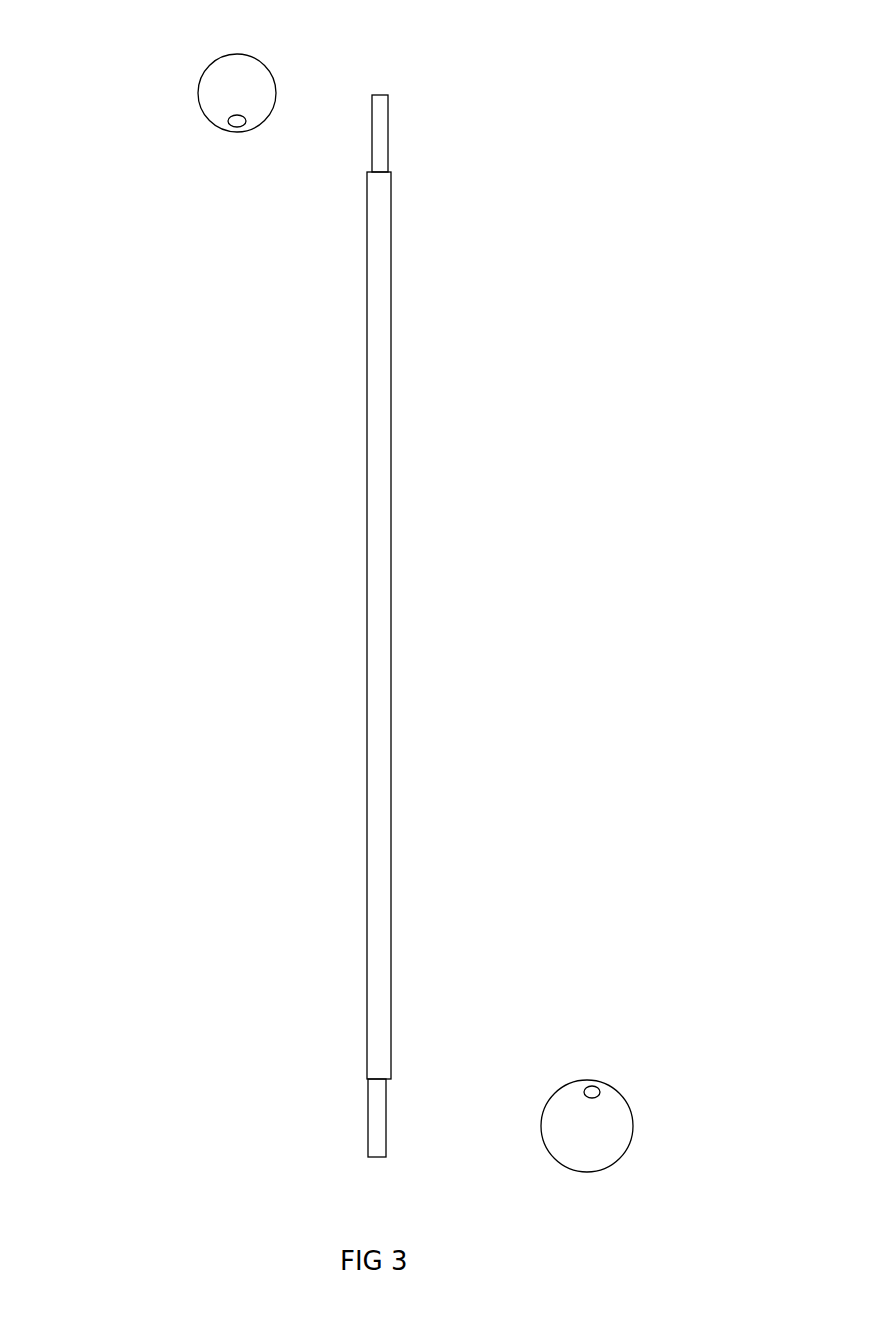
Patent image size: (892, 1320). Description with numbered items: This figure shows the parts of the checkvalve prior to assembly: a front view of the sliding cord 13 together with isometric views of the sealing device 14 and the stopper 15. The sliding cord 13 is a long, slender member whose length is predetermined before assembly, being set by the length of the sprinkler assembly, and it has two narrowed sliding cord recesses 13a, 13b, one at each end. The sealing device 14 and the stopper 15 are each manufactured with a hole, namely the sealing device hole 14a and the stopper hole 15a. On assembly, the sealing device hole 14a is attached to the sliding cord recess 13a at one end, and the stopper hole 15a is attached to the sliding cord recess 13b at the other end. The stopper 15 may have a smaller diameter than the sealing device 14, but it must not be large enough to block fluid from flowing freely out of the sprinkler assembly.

The sliding cord 13 is at (396, 578).
The sliding cord recess 13a is at (364, 1102).
The sliding cord recess 13b is at (394, 127).
The sealing device 14 is at (622, 1142).
The sealing device hole 14a is at (597, 1084).
The stopper 15 is at (209, 76).
The stopper hole 15a is at (224, 132).